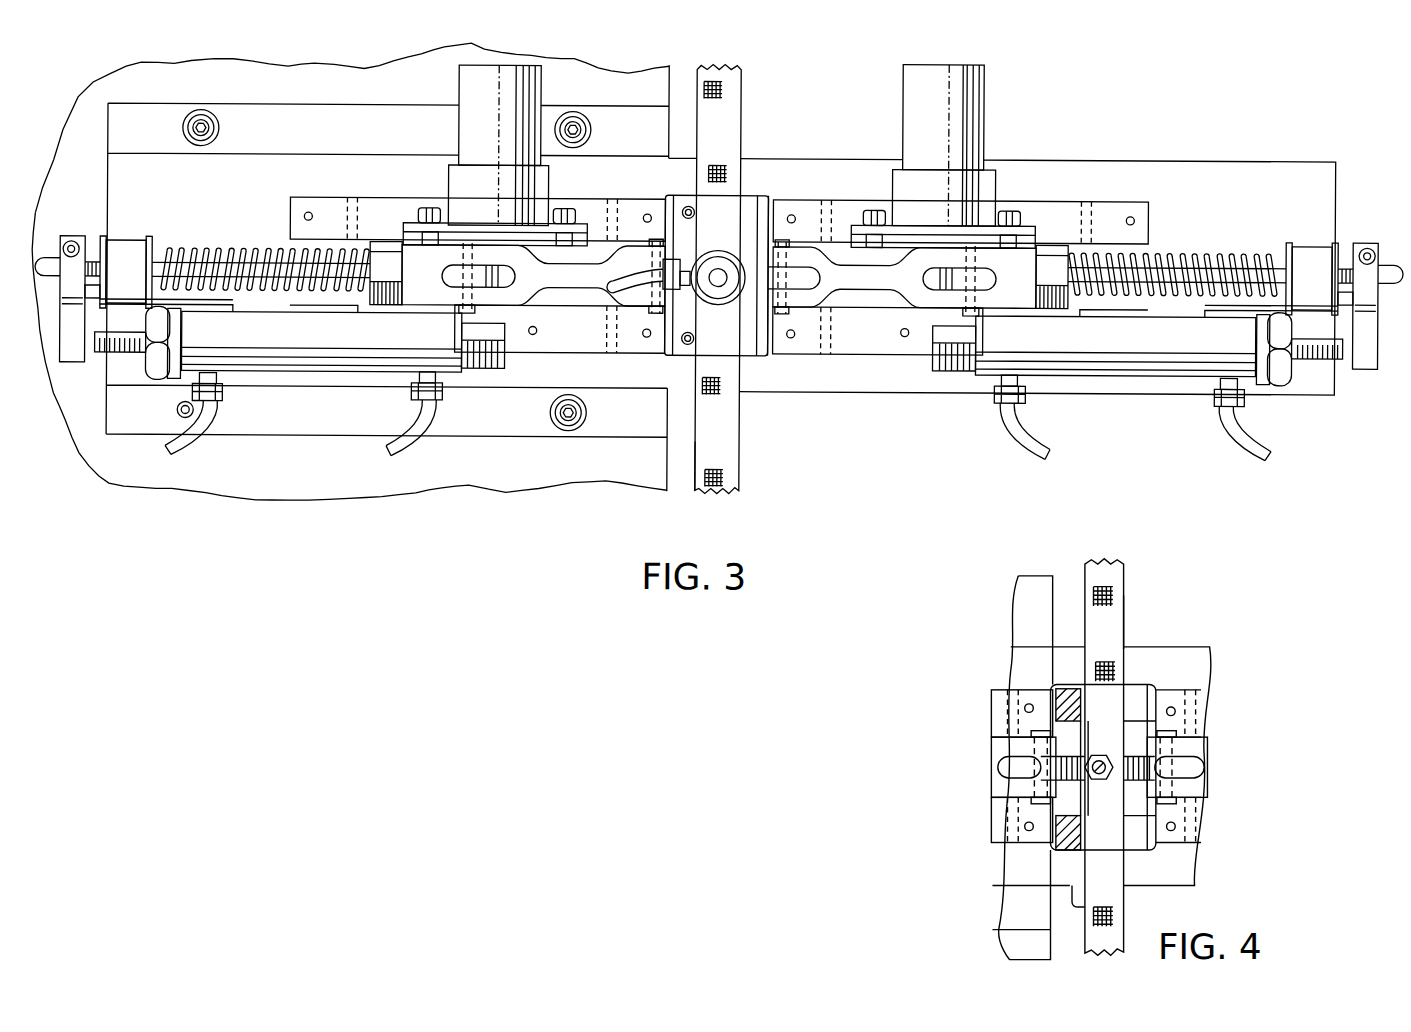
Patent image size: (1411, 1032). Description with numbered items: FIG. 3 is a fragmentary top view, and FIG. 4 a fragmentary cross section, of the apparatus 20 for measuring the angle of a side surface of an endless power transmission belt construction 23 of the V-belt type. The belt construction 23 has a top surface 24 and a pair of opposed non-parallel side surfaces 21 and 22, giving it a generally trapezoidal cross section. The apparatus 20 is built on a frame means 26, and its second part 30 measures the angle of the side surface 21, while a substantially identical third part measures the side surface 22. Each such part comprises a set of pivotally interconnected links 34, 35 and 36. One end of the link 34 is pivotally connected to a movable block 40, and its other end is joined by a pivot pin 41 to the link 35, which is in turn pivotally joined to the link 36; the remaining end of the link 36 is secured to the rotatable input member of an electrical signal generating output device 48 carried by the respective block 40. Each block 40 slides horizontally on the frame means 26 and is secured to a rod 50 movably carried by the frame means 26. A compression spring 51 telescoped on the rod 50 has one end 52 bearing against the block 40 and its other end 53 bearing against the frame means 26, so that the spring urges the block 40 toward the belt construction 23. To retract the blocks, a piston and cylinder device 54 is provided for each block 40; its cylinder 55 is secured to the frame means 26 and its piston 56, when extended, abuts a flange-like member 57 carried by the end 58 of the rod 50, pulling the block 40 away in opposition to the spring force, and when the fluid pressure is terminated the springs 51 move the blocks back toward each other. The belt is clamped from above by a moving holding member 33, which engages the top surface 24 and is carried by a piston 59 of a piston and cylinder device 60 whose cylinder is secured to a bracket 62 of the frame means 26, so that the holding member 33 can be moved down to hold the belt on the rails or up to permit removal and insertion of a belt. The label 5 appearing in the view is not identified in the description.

In FIG. 3, the workpiece 5 is at (335, 291).
In FIG. 3, the apparatus 20 is at (815, 91).
In FIG. 3, the side surface 21 is at (697, 472).
In FIG. 3, the side surface 22 is at (738, 466).
In FIG. 3, the endless power transmission belt construction 23 is at (741, 429).
In FIG. 4, the endless power transmission belt construction 23 is at (1110, 606).
In FIG. 4, the top surface 24 is at (1097, 572).
In FIG. 3, the frame means 26 is at (303, 117).
In FIG. 4, the frame means 26 is at (1163, 650).
In FIG. 3, the second part 30 is at (807, 223).
In FIG. 4, the holding member 33 is at (1088, 813).
In FIG. 3, the link 34 is at (768, 293).
In FIG. 4, the link 34 is at (1038, 748).
In FIG. 3, the link 35 is at (583, 290).
In FIG. 4, the link 35 is at (997, 768).
In FIG. 3, the link 36 is at (480, 276).
In FIG. 3, the movable block 40 is at (590, 253).
In FIG. 3, the pivot pin 41 is at (660, 248).
In FIG. 4, the pivot pin 41 is at (1030, 787).
In FIG. 3, the electrical signal generating output device 48 is at (455, 78).
In FIG. 3, the rod 50 is at (263, 258).
In FIG. 3, the compression spring 51 is at (272, 248).
In FIG. 3, the end of compression spring 52 is at (366, 256).
In FIG. 3, the end of compression spring 53 is at (163, 283).
In FIG. 3, the piston and cylinder device 54 is at (334, 376).
In FIG. 3, the cylinder 55 is at (375, 372).
In FIG. 3, the piston 56 is at (122, 350).
In FIG. 3, the flange-like member 57 is at (84, 352).
In FIG. 3, the end of rod 58 is at (44, 250).
In FIG. 4, the piston 59 is at (1092, 750).
In FIG. 3, the piston and cylinder device 60 is at (728, 241).
In FIG. 3, the bracket 62 is at (733, 331).